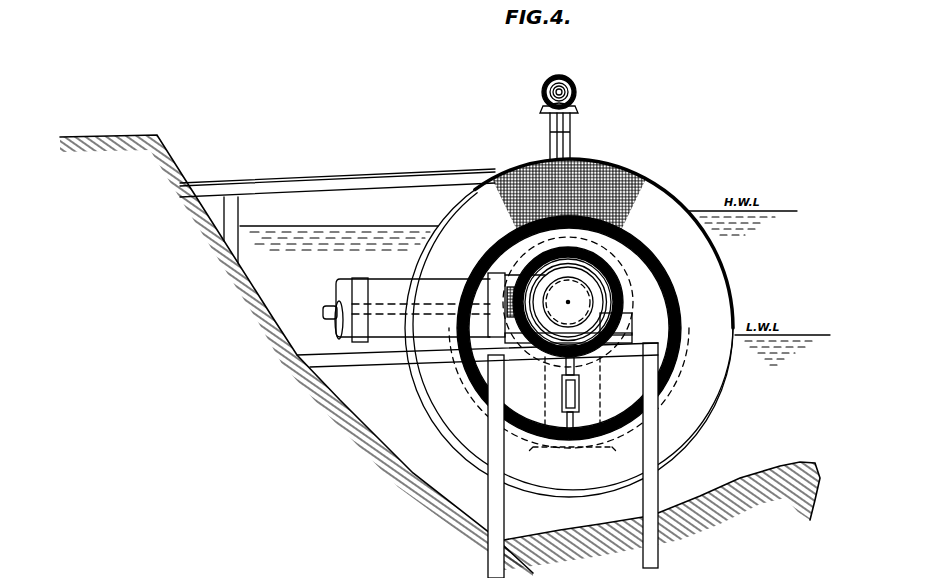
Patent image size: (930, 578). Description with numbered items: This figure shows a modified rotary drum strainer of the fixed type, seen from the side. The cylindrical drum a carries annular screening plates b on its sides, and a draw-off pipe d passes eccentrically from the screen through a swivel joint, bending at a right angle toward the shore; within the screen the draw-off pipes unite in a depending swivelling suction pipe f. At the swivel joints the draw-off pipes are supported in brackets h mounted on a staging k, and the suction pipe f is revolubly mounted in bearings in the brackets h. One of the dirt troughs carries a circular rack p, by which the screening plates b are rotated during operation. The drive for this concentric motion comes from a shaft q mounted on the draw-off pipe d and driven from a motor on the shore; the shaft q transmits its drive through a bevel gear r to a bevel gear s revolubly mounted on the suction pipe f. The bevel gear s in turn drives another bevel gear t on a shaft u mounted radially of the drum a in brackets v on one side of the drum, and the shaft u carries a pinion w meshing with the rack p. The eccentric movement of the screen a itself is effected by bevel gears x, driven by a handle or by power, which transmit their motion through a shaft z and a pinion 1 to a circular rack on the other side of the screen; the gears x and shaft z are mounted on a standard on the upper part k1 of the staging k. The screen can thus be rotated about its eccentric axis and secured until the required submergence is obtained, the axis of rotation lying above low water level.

The cylindrical drum a is at (648, 188).
The annular screening plates b is at (604, 168).
The bevel gears x is at (576, 87).
The shaft z is at (551, 140).
The upper part of the staging k1 is at (372, 175).
The pinion 1 is at (621, 230).
The circular rack p is at (664, 272).
The suction pipe f is at (606, 434).
The bevel gear s is at (618, 278).
The shaft q is at (457, 278).
The draw-off pipe d is at (443, 331).
The bevel gear r is at (510, 287).
The brackets h is at (621, 323).
The staging k is at (650, 421).
The bevel gear t is at (564, 396).
The shaft u is at (580, 389).
The brackets v is at (562, 398).
The pinion w is at (572, 460).